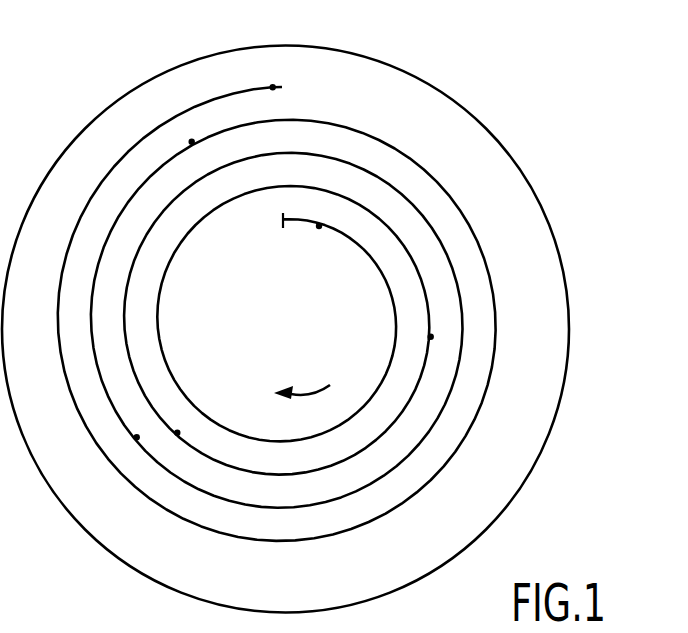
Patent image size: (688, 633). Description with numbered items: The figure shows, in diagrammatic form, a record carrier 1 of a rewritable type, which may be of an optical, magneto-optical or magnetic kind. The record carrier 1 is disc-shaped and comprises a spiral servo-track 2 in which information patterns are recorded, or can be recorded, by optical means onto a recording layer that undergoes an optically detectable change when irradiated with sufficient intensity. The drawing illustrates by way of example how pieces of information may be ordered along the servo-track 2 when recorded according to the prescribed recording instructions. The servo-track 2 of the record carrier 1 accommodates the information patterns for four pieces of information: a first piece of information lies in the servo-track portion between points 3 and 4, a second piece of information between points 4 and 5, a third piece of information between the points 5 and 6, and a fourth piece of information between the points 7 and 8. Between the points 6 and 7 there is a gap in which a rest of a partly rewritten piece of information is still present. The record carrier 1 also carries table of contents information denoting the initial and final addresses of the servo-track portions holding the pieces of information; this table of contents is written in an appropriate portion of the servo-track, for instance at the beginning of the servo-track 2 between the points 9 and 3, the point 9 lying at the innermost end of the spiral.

The record carrier 1 is at (551, 228).
The spiral servo-track 2 is at (230, 535).
The point 3 is at (319, 226).
The point 4 is at (431, 337).
The point 5 is at (185, 423).
The point 6 is at (137, 437).
The point 7 is at (192, 142).
The point 8 is at (273, 87).
The point 9 is at (281, 218).